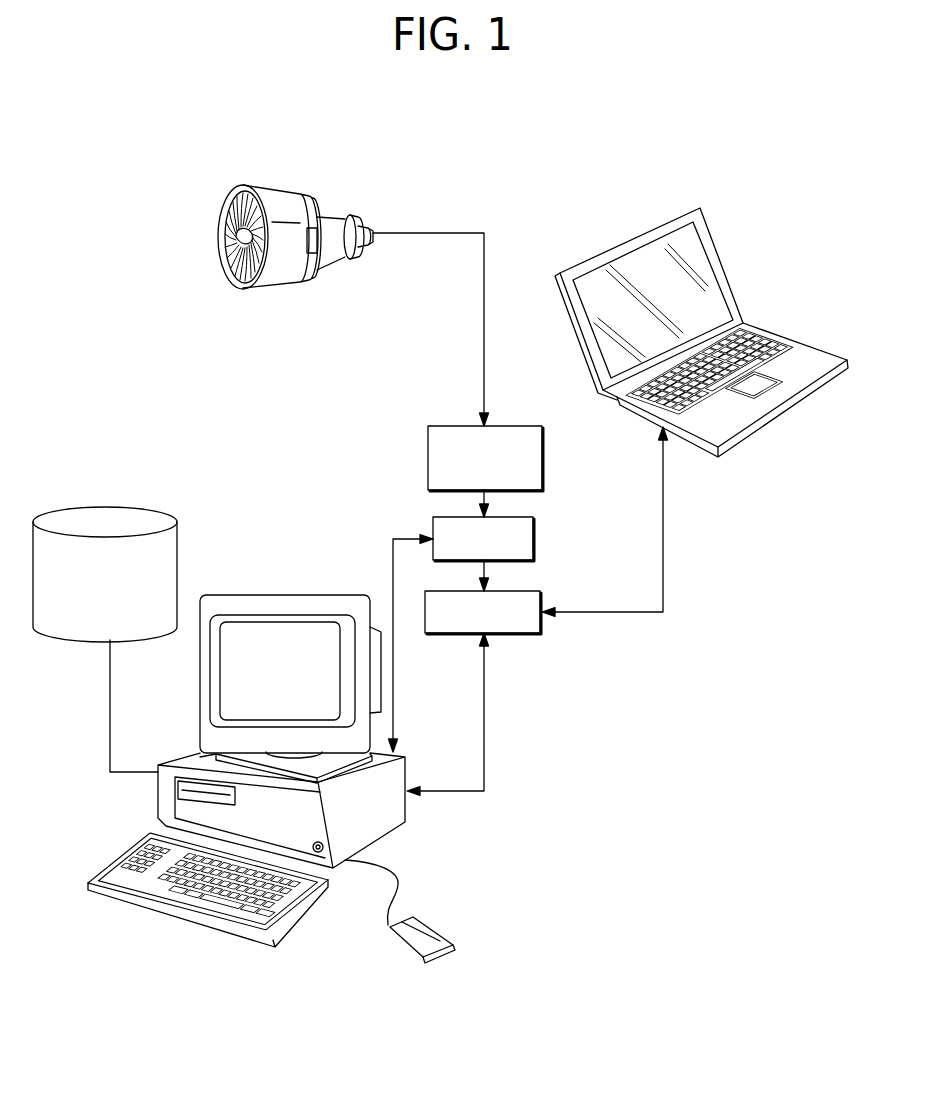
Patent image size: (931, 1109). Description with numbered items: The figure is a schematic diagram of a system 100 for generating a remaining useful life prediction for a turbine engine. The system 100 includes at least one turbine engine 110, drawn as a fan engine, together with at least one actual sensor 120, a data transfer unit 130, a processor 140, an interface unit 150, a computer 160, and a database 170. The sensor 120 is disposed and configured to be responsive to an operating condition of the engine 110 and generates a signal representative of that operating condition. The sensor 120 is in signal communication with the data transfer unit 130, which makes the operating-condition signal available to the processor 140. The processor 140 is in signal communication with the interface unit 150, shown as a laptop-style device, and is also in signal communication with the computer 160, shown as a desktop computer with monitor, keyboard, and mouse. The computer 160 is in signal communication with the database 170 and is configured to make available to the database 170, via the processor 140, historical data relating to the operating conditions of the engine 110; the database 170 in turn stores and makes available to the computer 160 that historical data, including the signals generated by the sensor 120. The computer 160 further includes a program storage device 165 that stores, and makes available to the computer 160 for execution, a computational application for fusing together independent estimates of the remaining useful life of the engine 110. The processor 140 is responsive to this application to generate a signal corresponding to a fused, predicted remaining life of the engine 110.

The system 100 is at (167, 147).
The turbine engine 110 is at (353, 211).
The actual sensor 120 is at (543, 457).
The data transfer unit 130 is at (533, 540).
The processor 140 is at (543, 603).
The interface unit 150 is at (718, 250).
The computer 160 is at (407, 807).
The program storage device 165 is at (158, 808).
The database 170 is at (108, 507).